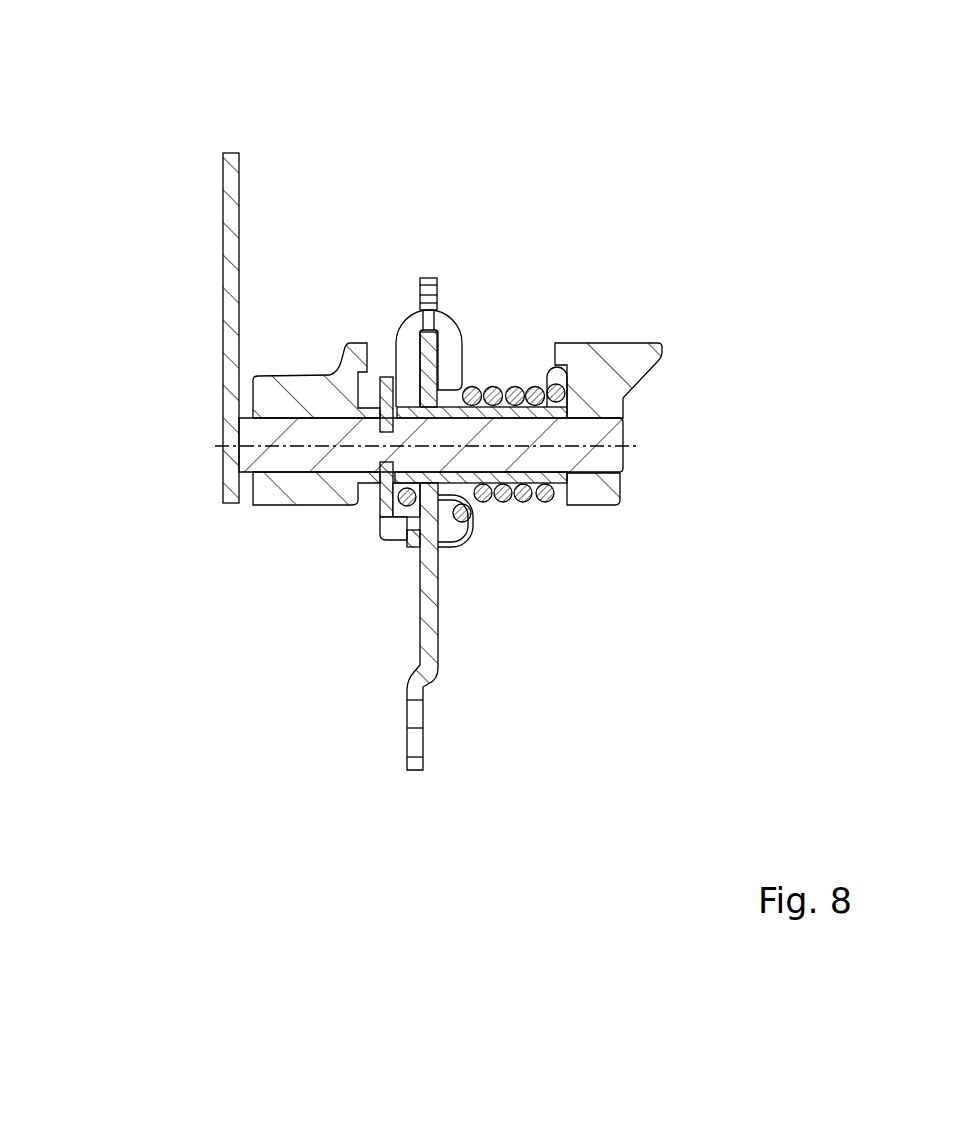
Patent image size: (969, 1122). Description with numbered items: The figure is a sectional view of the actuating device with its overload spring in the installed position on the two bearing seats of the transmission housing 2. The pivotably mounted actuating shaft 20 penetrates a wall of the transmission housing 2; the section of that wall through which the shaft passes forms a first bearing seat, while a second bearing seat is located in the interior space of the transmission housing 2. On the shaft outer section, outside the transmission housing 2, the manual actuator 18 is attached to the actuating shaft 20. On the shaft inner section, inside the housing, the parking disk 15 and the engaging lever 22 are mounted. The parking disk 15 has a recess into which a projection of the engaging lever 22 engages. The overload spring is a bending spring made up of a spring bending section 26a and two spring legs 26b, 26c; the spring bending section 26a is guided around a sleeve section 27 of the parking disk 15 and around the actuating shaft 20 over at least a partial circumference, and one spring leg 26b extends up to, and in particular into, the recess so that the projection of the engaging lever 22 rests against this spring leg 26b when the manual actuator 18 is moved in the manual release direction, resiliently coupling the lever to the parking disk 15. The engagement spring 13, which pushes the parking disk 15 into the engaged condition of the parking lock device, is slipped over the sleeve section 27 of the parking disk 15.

The transmission housing 2 is at (300, 392).
The engagement spring 13 is at (515, 385).
The parking disk 15 is at (433, 610).
The manual actuator 18 is at (230, 208).
The actuating shaft 20 is at (595, 433).
The engaging lever 22 is at (385, 377).
The spring bending section 26a is at (382, 507).
The spring leg 26b is at (448, 357).
The spring leg 26c is at (460, 546).
The sleeve section 27 is at (533, 505).